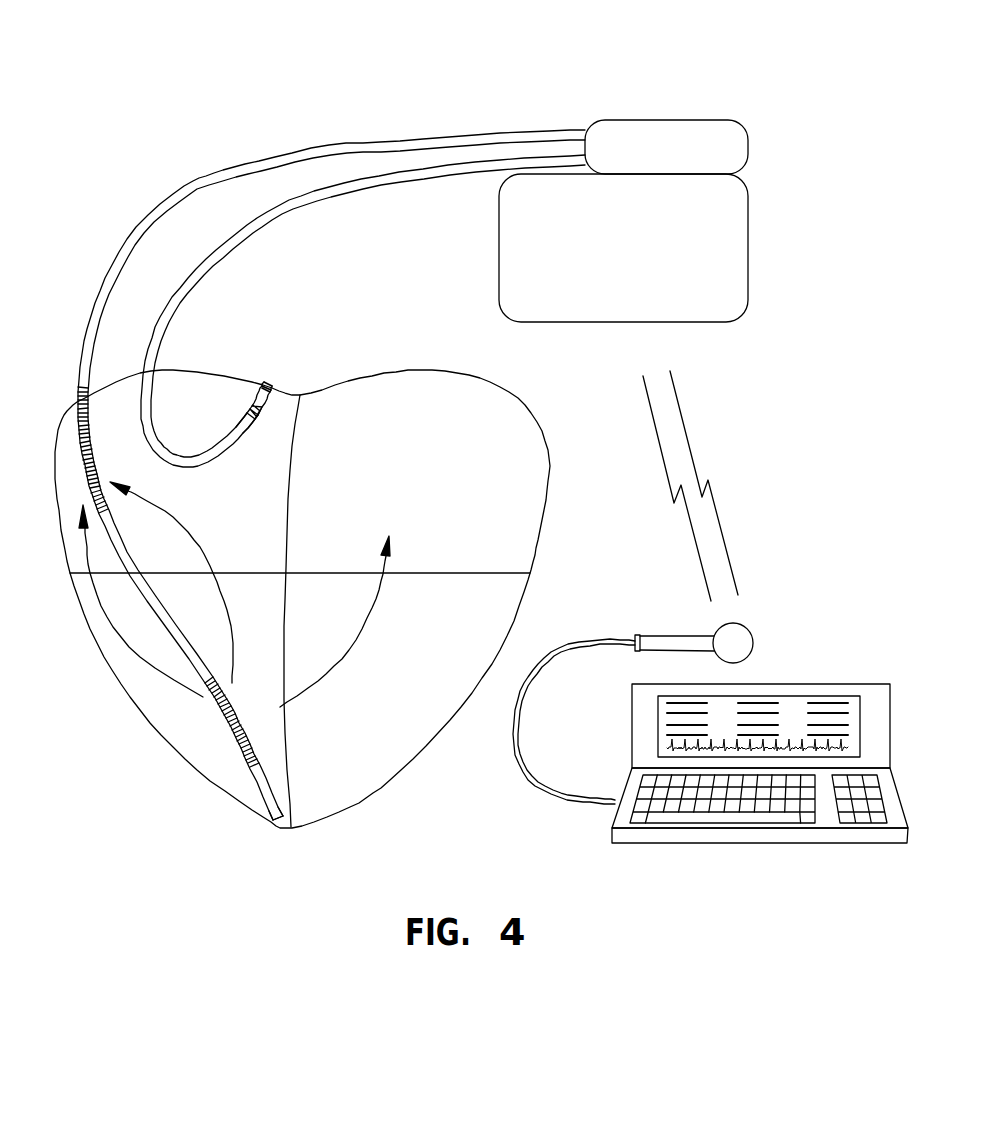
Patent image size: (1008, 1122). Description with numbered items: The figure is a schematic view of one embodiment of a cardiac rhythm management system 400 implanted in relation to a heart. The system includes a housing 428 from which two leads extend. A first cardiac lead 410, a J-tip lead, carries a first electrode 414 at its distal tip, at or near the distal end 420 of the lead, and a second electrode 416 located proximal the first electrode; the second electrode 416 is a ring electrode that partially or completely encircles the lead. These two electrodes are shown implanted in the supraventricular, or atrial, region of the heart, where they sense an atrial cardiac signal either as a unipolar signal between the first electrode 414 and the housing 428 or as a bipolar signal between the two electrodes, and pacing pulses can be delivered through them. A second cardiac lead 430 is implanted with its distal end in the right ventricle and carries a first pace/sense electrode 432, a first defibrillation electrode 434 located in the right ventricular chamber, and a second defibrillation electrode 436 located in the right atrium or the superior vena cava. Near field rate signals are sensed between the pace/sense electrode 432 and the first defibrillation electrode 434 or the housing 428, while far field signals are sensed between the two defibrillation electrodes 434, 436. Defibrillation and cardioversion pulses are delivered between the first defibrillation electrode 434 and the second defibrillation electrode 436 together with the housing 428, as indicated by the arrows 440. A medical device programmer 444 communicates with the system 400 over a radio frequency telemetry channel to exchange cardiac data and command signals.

The cardiac rhythm management system 400 is at (548, 82).
The first cardiac lead 410 is at (250, 230).
The first electrode 414 is at (267, 386).
The second electrode 416 is at (262, 418).
The distal end 420 is at (252, 400).
The housing 428 is at (748, 250).
The second cardiac lead 430 is at (193, 183).
The first pace/sense electrode 432 is at (272, 821).
The first defibrillation electrode 434 is at (222, 714).
The second defibrillation electrode 436 is at (74, 438).
The arrows 440 is at (210, 558).
The medical device programmer 444 is at (760, 683).